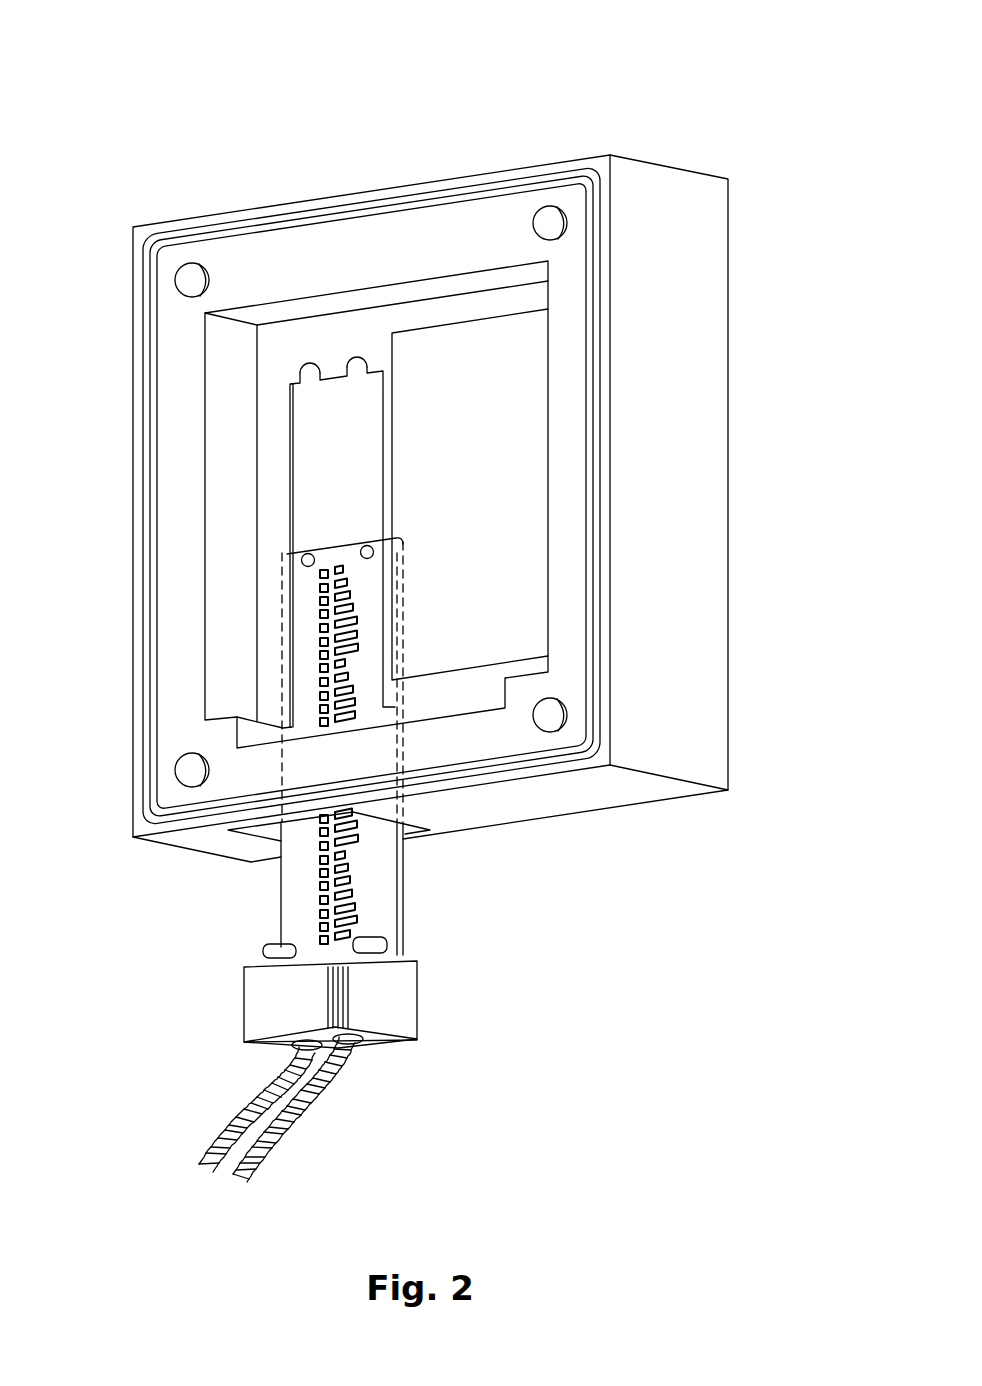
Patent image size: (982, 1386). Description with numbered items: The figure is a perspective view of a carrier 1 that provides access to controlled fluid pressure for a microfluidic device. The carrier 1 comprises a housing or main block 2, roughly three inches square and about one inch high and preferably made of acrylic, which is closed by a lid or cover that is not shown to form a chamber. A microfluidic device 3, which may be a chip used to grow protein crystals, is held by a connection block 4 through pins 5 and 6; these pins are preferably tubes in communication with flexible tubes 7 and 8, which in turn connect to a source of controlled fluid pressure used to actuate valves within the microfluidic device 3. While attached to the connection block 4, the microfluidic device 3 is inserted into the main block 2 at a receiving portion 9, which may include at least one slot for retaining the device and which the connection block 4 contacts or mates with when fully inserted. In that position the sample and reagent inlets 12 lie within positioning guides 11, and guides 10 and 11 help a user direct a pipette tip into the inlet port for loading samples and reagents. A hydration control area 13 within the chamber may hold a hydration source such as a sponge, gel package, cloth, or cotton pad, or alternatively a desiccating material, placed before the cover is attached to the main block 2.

The carrier 1 is at (508, 98).
The main block 2 is at (704, 210).
The microfluidic device 3 is at (405, 870).
The connection block 4 is at (402, 997).
The pin 5 is at (262, 948).
The pin 6 is at (403, 947).
The flexible tube 7 is at (223, 1118).
The flexible tube 8 is at (330, 1093).
The receiving portion 9 is at (305, 457).
The guide 10 is at (358, 358).
The positioning guide 11 is at (297, 374).
The sample and reagent inlets 12 is at (361, 555).
The hydration control area 13 is at (466, 330).